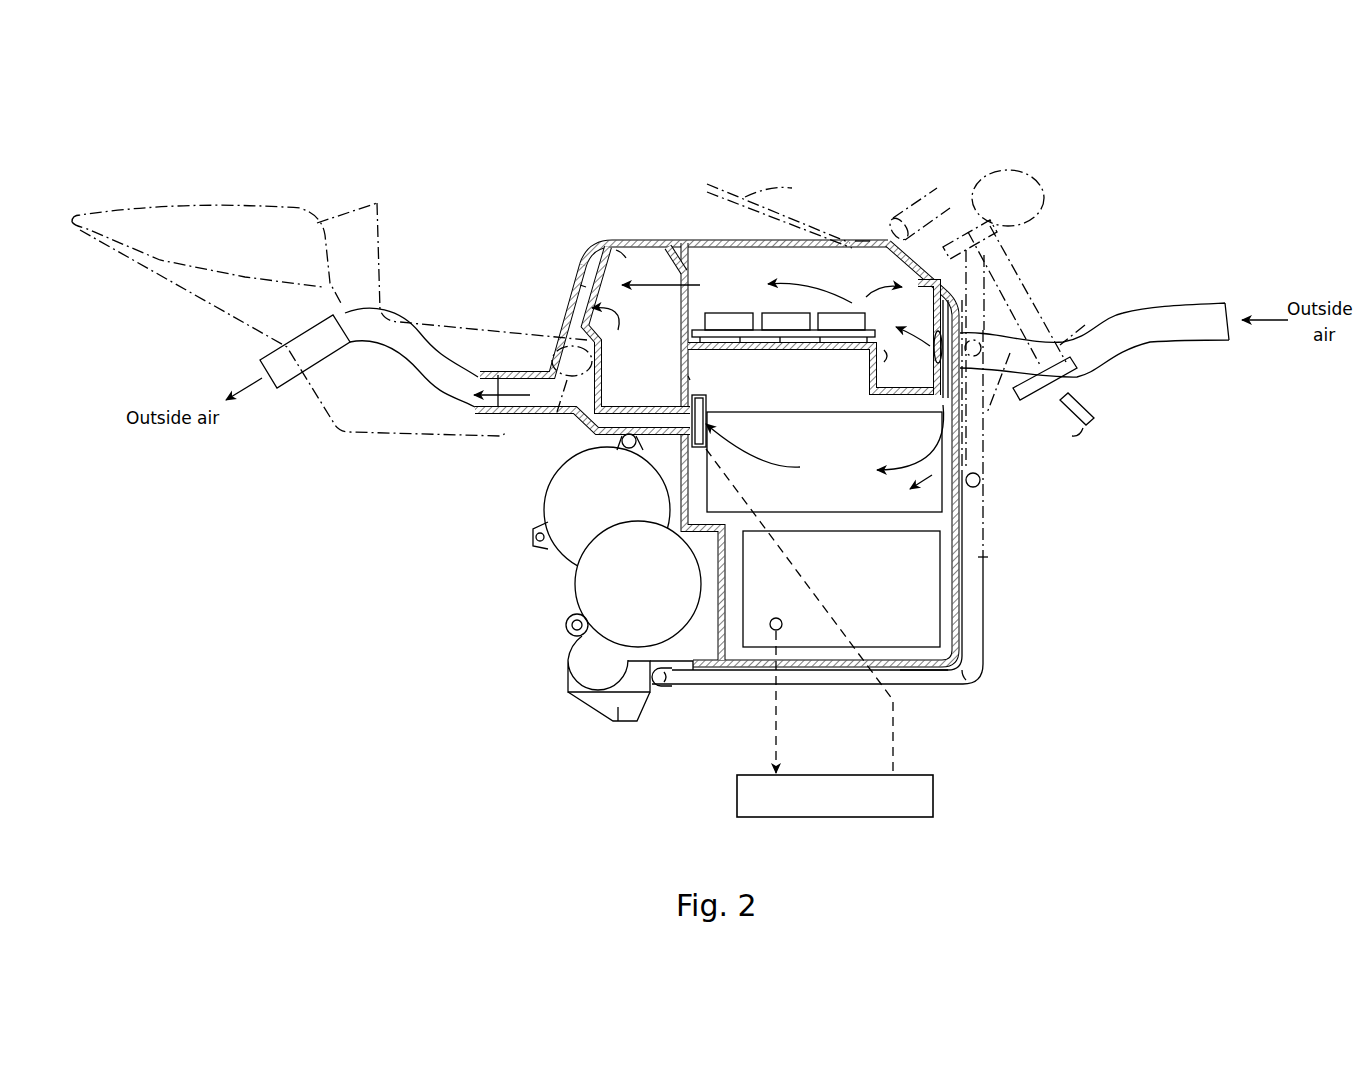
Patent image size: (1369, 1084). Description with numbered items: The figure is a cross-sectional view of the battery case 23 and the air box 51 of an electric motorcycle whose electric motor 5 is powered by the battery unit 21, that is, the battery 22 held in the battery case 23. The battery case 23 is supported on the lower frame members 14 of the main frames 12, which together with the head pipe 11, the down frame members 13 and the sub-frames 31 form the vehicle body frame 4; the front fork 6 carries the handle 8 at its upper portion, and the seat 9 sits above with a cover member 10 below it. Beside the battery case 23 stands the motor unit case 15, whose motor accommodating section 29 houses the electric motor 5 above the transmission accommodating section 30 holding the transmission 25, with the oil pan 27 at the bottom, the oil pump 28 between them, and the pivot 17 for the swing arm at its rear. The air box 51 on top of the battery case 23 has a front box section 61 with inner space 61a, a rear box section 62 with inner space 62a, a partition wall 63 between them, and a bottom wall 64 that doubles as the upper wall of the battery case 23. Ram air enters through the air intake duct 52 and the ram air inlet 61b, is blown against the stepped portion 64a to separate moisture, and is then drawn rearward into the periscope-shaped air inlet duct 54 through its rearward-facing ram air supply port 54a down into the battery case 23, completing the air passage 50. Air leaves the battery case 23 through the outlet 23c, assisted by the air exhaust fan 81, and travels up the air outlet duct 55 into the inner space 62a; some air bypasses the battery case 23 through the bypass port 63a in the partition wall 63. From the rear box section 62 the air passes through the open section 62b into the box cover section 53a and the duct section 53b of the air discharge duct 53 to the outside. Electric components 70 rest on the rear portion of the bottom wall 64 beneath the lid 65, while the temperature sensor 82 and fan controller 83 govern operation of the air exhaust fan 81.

The vehicle body frame 4 is at (1005, 575).
The electric motor 5 is at (543, 611).
The front fork 6 is at (1078, 395).
The handle 8 is at (985, 205).
The seat 9 is at (377, 202).
The cover member 10 is at (218, 288).
The head pipe 11 is at (1085, 325).
The main frames 12 is at (978, 672).
The down frame members 13 is at (986, 590).
The lower frame members 14 is at (935, 688).
The motor unit case 15 is at (670, 655).
The pivot 17 is at (562, 630).
The battery unit 21 is at (969, 680).
The battery 22 is at (927, 483).
The battery case 23 is at (723, 688).
The outlet 23c is at (679, 388).
The transmission 25 is at (604, 585).
The oil pan 27 is at (618, 706).
The oil pump 28 is at (593, 678).
The motor accommodating section 29 is at (544, 489).
The transmission accommodating section 30 is at (578, 601).
The sub-frames 31 is at (975, 463).
The air passage 50 is at (983, 557).
The air box 51 is at (861, 238).
The air intake duct 52 is at (1182, 335).
The air discharge duct 53 is at (545, 343).
The box cover section 53a is at (572, 300).
The duct section 53b is at (342, 398).
The air inlet duct 54 is at (1000, 278).
The ram air supply port 54a is at (960, 230).
The air outlet duct 55 is at (640, 409).
The front box section 61 is at (818, 240).
The inner space 61a is at (871, 262).
The ram air inlet 61b is at (947, 308).
The rear box section 62 is at (622, 240).
The inner space 62a is at (622, 258).
The open section 62b is at (590, 282).
The partition wall 63 is at (686, 252).
The bypass port 63a is at (682, 272).
The bottom wall 64 is at (880, 404).
The stepped portion 64a is at (884, 360).
The lid 65 is at (778, 240).
The electric components 70 is at (830, 323).
The air exhaust fan 81 is at (701, 393).
The temperature sensor 82 is at (771, 631).
The fan controller 83 is at (826, 818).